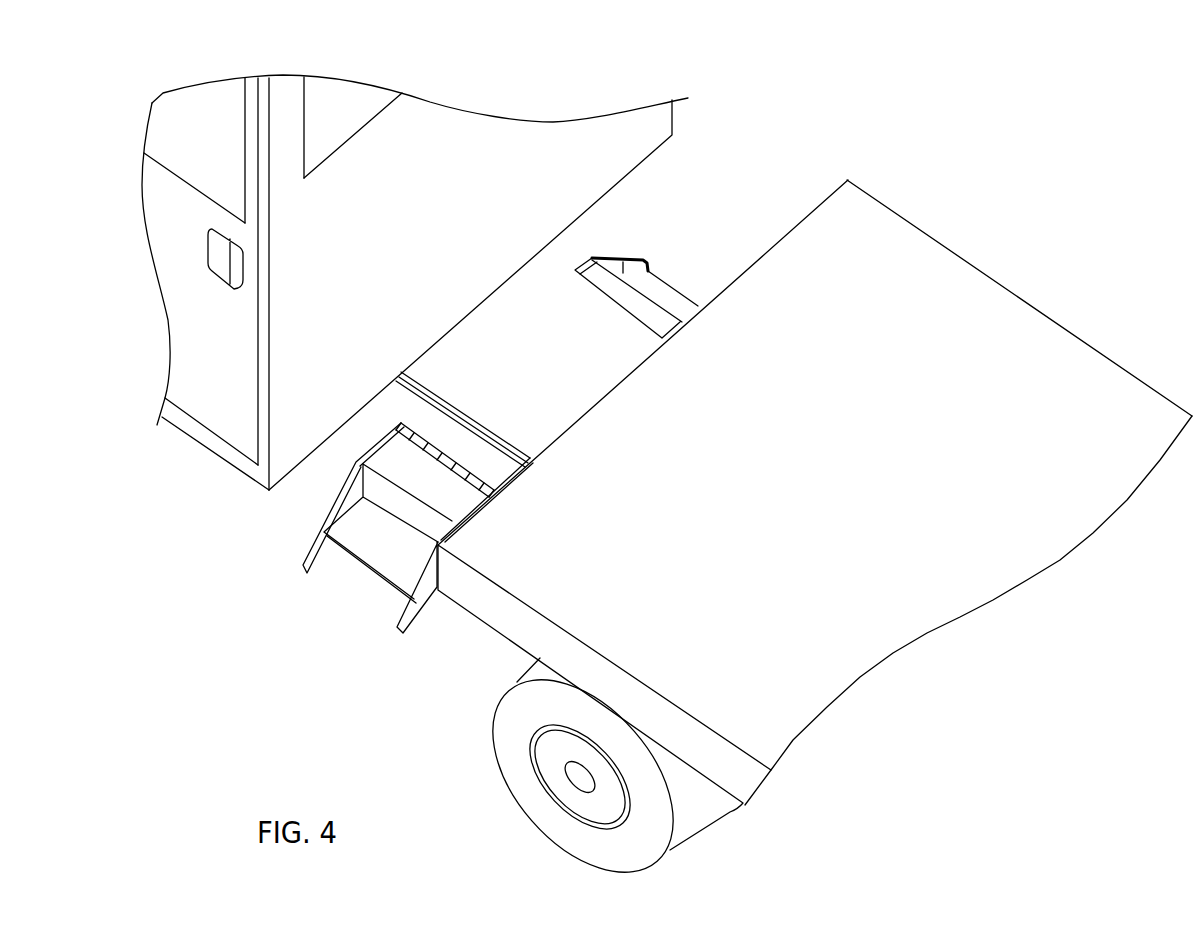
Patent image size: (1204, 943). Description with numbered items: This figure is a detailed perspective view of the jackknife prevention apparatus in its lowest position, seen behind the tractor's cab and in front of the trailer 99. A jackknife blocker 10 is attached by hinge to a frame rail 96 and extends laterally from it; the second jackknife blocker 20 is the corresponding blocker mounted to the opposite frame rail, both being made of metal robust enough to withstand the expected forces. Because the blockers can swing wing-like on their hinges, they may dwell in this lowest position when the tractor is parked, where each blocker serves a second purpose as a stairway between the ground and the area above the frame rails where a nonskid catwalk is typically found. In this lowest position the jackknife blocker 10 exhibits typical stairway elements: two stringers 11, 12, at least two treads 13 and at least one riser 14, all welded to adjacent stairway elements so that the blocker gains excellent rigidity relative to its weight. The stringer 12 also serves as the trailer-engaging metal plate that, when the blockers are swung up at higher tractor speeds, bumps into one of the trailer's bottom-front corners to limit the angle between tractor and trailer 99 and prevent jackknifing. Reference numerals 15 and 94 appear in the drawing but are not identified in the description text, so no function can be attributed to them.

The jackknife blocker 10 is at (395, 537).
The stringer 11 is at (323, 553).
The stringer 12 is at (420, 610).
The tread 13 is at (448, 480).
The riser 14 is at (377, 483).
The hinge 15 is at (428, 432).
The jackknife blocker 20 is at (689, 260).
The deck 94 is at (538, 276).
The frame rail 96 is at (412, 403).
The trailer 99 is at (908, 262).